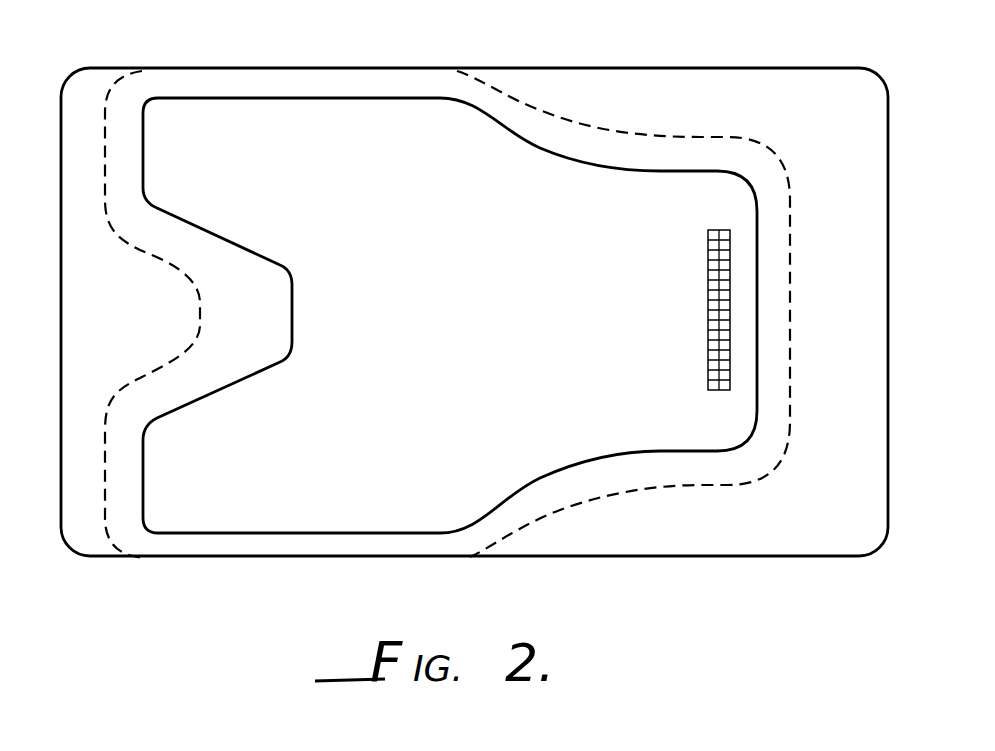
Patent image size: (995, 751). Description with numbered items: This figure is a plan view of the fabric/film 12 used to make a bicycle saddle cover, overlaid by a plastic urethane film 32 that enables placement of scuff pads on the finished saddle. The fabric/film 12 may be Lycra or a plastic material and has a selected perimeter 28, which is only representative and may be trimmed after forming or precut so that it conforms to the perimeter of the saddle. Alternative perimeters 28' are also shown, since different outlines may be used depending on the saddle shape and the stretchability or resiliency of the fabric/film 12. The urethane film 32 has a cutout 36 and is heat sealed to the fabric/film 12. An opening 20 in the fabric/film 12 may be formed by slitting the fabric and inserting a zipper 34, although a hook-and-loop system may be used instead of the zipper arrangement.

The fabric/film 12 is at (450, 281).
The opening 20 is at (676, 304).
The perimeter 28 is at (450, 281).
The perimeters 28' is at (447, 314).
The urethane film 32 is at (829, 67).
The zipper 34 is at (697, 286).
The cutout 36 is at (476, 110).